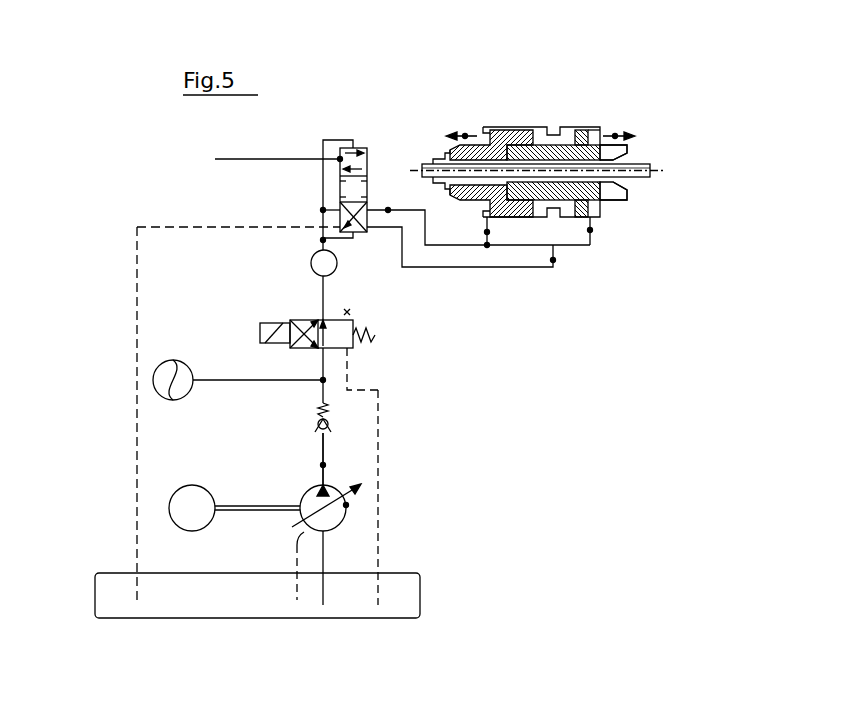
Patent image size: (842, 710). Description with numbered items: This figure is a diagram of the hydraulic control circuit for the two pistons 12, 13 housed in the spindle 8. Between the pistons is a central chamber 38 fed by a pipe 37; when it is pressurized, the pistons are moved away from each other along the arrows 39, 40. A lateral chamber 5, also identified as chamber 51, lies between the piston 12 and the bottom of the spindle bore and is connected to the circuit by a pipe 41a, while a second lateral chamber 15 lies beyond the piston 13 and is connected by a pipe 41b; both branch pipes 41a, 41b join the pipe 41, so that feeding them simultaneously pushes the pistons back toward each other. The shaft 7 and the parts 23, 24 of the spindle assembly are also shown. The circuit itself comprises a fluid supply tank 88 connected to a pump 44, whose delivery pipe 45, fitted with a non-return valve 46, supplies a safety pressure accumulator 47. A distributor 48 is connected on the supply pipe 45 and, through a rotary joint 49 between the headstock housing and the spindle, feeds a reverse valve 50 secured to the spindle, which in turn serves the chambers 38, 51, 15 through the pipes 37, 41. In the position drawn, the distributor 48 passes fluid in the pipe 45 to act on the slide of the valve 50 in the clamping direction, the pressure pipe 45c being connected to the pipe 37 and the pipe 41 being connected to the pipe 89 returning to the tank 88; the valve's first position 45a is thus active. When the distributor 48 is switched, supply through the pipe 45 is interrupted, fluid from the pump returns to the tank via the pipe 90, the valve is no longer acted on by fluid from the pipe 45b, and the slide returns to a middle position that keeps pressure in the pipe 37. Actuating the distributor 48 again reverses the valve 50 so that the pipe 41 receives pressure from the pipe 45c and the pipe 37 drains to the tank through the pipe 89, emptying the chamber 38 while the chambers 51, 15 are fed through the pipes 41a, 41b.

The spindle 8 is at (500, 127).
The lateral chamber 51 is at (487, 130).
The piston 12 is at (513, 135).
The central chamber 38 is at (568, 133).
The piston 13 is at (585, 135).
The second lateral chamber 15 is at (600, 130).
The arrow 39 is at (466, 136).
The arrow 40 is at (615, 136).
The sleeve 23 is at (450, 153).
The sleeve end 24 is at (617, 160).
The shaft 7 is at (645, 172).
The pipe 41 is at (388, 210).
The pipe 41a is at (487, 233).
The pipe 41b is at (590, 230).
The pipe 37 is at (553, 260).
The delivery pipe 45 is at (323, 465).
The valve first position 45a is at (330, 140).
The pipe 45b is at (343, 240).
The pipe 45c is at (333, 210).
The reverse valve 50 is at (279, 154).
The rotary joint 49 is at (312, 252).
The pipe 89 is at (162, 227).
The distributor 48 is at (297, 304).
The lateral chamber 5 is at (300, 319).
The safety pressure accumulator 47 is at (162, 373).
The non-return valve 46 is at (331, 423).
The pump 44 is at (362, 486).
The pipe 90 is at (380, 523).
The fluid supply tank 88 is at (420, 595).